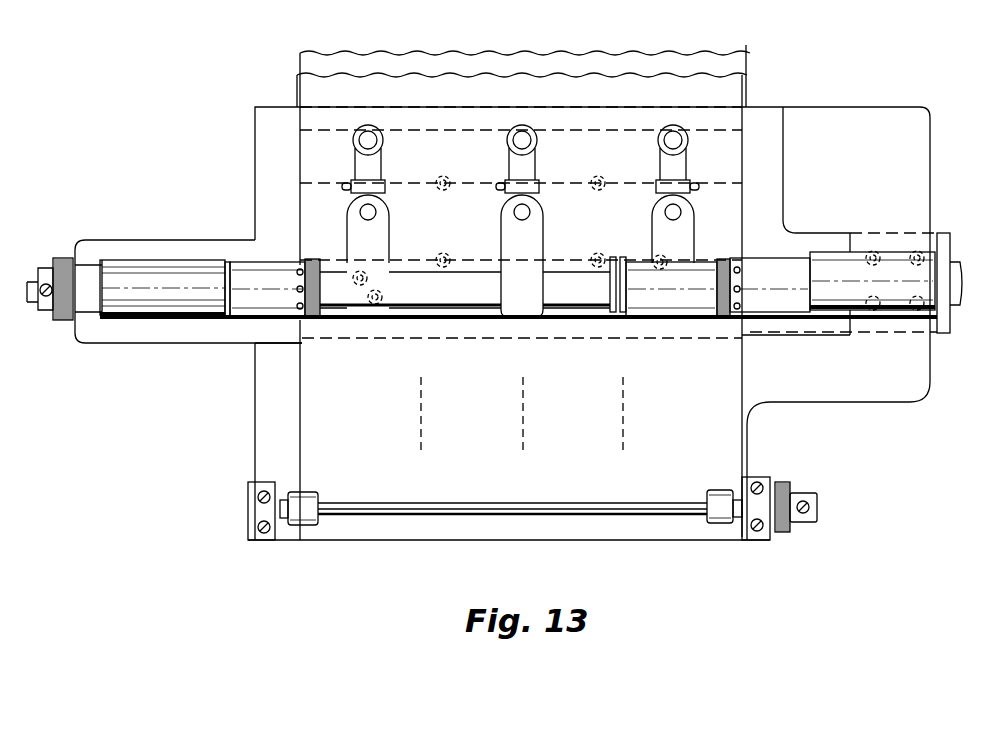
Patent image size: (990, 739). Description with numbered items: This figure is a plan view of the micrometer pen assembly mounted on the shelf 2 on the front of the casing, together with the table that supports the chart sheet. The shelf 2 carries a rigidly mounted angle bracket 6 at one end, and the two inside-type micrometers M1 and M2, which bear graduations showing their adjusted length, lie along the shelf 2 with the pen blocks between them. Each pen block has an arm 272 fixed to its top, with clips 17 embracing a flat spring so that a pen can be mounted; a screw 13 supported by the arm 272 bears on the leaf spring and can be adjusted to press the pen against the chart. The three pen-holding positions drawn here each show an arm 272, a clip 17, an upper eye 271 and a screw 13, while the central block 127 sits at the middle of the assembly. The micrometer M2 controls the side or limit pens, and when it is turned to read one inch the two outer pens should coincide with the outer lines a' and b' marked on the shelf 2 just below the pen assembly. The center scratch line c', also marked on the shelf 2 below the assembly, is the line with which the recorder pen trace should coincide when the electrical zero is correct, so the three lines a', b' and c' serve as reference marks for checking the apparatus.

The shelf 2 is at (920, 371).
The angle bracket 6 is at (943, 240).
The screw 13 is at (374, 208).
The clips 17 is at (350, 186).
The central clamp block 127 is at (529, 272).
The ring eye 271 is at (376, 169).
The arm 272 is at (382, 243).
The micrometer M1 is at (891, 275).
The micrometer M2 is at (143, 282).
The outer line a' is at (644, 414).
The outer line b' is at (442, 414).
The center scratch line c' is at (544, 414).